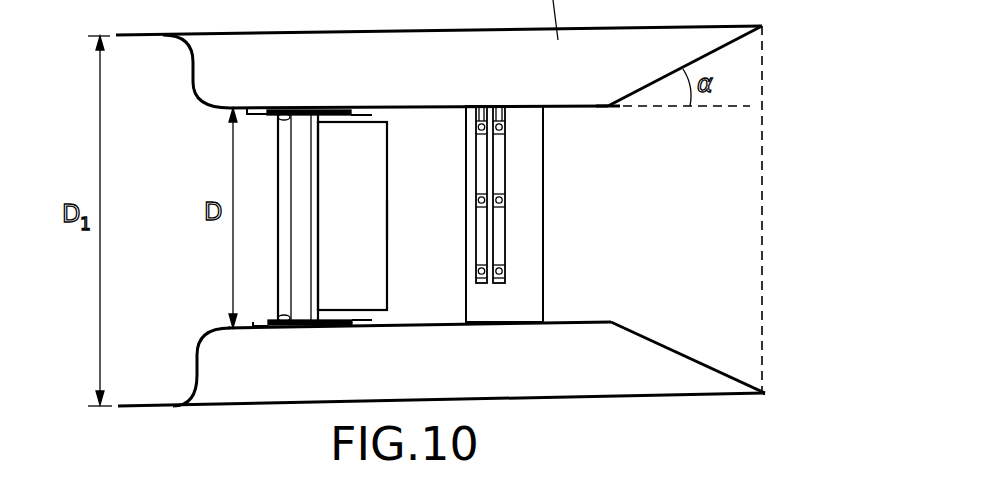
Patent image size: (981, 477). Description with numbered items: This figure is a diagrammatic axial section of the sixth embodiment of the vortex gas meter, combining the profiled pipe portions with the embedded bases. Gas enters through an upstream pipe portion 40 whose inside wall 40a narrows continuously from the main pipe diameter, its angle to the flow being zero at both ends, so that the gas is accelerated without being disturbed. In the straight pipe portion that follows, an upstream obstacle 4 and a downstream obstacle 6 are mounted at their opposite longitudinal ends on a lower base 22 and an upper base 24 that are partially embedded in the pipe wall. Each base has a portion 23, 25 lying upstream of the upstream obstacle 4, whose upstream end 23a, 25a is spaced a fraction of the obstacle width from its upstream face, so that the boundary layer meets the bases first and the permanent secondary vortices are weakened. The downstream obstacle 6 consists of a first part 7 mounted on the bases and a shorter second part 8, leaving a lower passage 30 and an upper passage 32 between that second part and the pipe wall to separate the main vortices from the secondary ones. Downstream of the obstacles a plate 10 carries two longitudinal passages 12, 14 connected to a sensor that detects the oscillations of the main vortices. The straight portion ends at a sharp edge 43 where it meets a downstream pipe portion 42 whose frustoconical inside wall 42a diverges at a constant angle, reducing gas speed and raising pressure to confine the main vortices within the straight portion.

The upstream obstacle 4 is at (280, 158).
The downstream obstacle 6 is at (388, 218).
The first part of the downstream obstacle 7 is at (318, 154).
The second part of the downstream obstacle 8 is at (373, 190).
The plate 10 is at (528, 152).
The longitudinal passage 12 is at (480, 105).
The longitudinal passage 14 is at (499, 105).
The lower base 22 is at (328, 326).
The base portion 23 is at (291, 325).
The upstream end 23a is at (252, 330).
The upper base 24 is at (325, 108).
The base portion 25 is at (287, 108).
The upstream end 25a is at (246, 108).
The lower passage 30 is at (365, 320).
The upper passage 32 is at (364, 117).
The upstream pipe portion 40 is at (200, 373).
The inside wall 40a is at (190, 70).
The downstream pipe portion 42 is at (695, 369).
The inside wall 42a is at (713, 51).
The sharp edge 43 is at (606, 104).